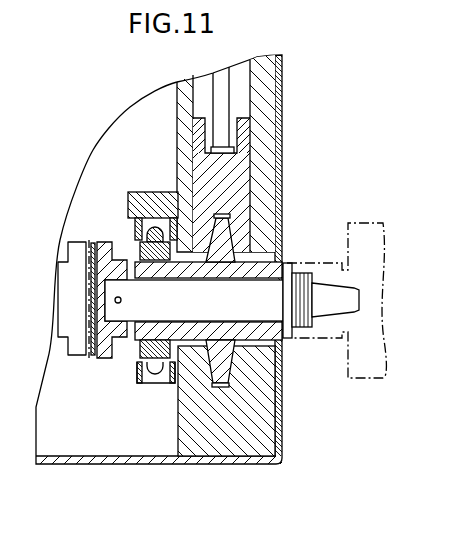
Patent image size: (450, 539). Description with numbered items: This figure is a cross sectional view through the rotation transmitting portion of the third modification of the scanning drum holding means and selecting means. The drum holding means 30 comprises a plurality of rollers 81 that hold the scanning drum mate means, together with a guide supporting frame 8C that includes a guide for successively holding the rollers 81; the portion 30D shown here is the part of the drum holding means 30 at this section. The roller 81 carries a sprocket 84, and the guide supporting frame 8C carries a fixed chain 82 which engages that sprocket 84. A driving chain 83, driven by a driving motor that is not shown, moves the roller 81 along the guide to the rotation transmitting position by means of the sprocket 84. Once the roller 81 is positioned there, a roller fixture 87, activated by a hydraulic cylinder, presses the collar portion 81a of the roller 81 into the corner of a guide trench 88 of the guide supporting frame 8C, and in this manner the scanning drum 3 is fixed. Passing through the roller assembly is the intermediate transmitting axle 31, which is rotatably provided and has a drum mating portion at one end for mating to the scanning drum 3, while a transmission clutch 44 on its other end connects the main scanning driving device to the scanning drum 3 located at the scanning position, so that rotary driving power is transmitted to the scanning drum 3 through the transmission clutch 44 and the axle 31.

The column 30D is at (115, 158).
The drum holding means 30 is at (97, 269).
The guide supporting frame 8C is at (187, 140).
The roller fixture 87 is at (243, 150).
The guide trench 88 is at (231, 366).
The fixed chain 82 is at (137, 227).
The roller 81 is at (221, 257).
The collar portion 81a is at (229, 225).
The sprocket 84 is at (140, 353).
The driving chain 83 is at (148, 383).
The intermediate transmitting axle 31 is at (273, 306).
The transmission clutch 44 is at (50, 325).
The scanning drum 3 is at (366, 225).